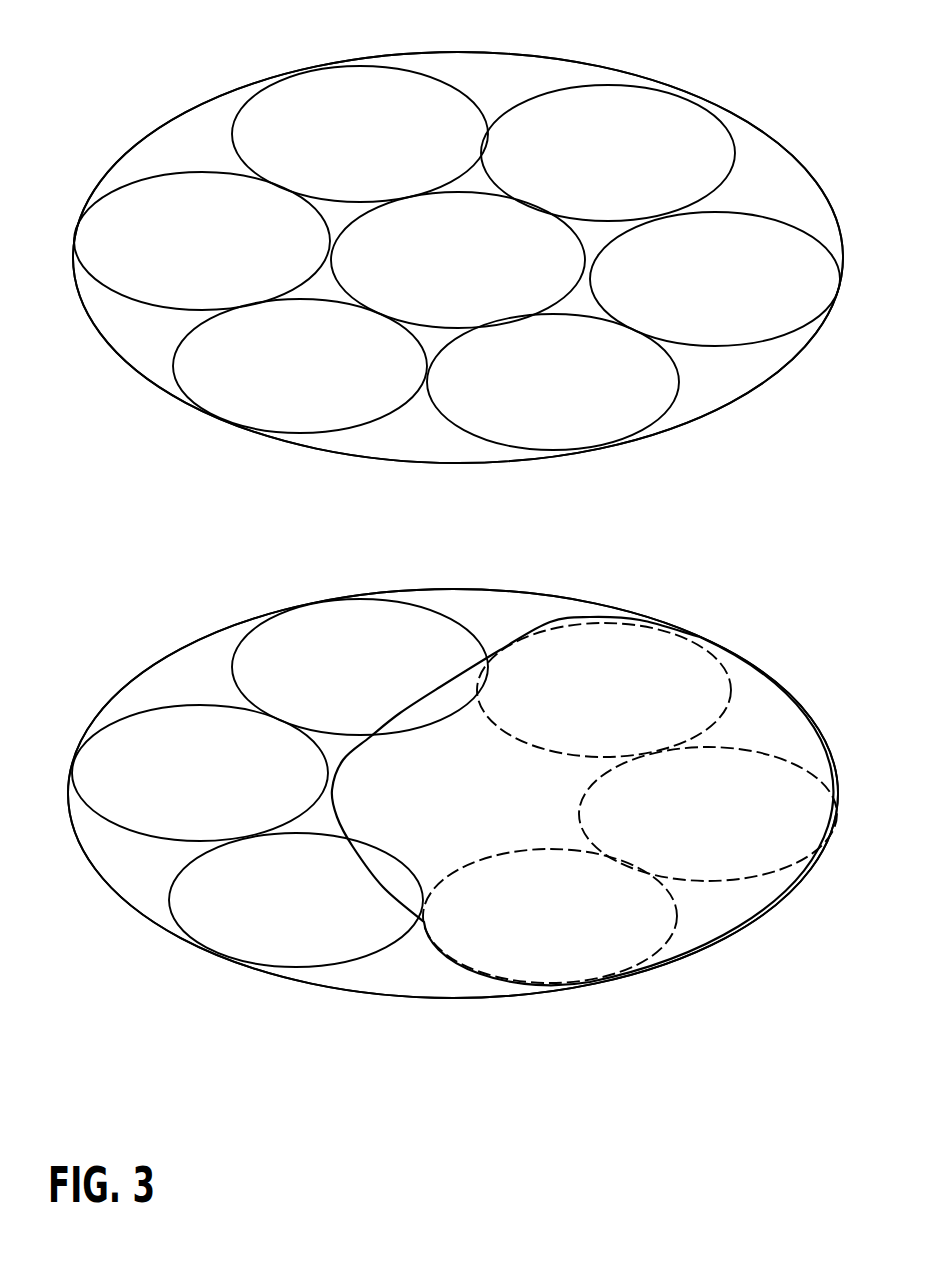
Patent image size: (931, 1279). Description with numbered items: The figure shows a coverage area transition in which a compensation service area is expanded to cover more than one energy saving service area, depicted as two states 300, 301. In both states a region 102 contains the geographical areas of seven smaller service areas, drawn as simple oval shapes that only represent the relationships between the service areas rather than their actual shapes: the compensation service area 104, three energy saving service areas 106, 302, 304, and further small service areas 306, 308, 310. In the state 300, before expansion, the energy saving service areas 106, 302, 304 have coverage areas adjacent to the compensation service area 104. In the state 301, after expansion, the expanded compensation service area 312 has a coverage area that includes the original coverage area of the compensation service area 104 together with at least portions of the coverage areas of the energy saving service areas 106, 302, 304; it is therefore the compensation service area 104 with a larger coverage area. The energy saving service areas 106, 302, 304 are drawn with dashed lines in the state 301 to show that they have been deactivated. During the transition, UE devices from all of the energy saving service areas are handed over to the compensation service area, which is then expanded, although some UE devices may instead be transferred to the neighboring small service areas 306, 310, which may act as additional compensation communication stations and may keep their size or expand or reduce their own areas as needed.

The region 102 is at (510, 53).
The compensation service area 104 is at (473, 270).
The energy saving service area 106 is at (727, 290).
The state 300 is at (223, 502).
The state 301 is at (268, 1062).
The energy saving service area 302 is at (568, 392).
The energy saving service area 304 is at (625, 164).
The small service area 306 is at (378, 146).
The service area 308 is at (220, 250).
The small service area 310 is at (315, 378).
The expanded compensation service area 312 is at (466, 658).